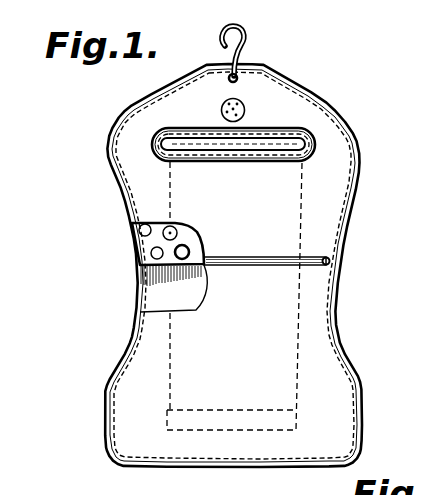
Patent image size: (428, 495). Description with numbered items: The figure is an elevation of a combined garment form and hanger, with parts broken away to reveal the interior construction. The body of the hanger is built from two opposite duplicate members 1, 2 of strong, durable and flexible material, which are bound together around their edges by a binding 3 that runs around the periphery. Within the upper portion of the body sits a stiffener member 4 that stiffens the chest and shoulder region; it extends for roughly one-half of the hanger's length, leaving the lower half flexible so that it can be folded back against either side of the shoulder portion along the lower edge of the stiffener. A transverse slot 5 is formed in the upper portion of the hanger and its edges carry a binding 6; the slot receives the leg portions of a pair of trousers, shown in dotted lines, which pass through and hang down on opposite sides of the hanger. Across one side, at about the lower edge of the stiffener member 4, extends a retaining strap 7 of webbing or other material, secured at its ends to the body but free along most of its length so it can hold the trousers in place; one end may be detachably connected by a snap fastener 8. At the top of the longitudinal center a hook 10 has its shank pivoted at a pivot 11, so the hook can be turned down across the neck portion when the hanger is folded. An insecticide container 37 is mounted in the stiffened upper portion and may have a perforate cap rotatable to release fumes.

The body member 1 is at (146, 182).
The body member 2 is at (160, 291).
The binding 3 is at (105, 395).
The stiffener member 4 is at (152, 246).
The transverse slot 5 is at (252, 137).
The binding 6 is at (210, 131).
The retaining strap 7 is at (247, 258).
The snap fastener 8 is at (330, 259).
The hook 10 is at (248, 38).
The pivot 11 is at (260, 78).
The insecticide container 37 is at (244, 100).